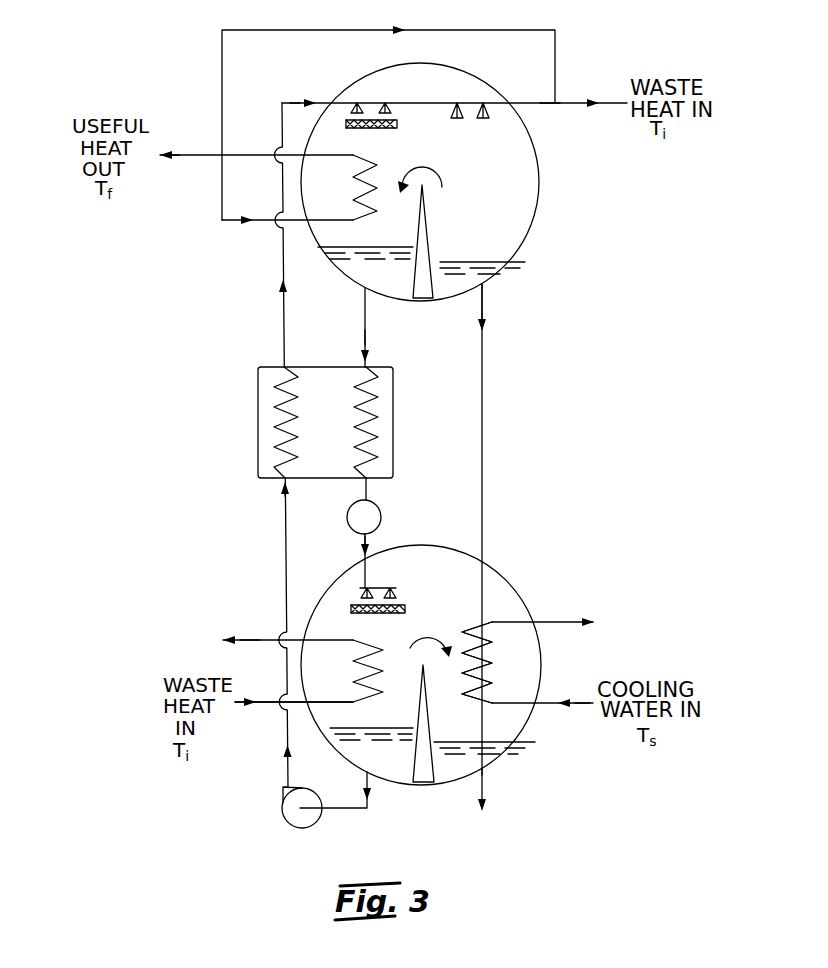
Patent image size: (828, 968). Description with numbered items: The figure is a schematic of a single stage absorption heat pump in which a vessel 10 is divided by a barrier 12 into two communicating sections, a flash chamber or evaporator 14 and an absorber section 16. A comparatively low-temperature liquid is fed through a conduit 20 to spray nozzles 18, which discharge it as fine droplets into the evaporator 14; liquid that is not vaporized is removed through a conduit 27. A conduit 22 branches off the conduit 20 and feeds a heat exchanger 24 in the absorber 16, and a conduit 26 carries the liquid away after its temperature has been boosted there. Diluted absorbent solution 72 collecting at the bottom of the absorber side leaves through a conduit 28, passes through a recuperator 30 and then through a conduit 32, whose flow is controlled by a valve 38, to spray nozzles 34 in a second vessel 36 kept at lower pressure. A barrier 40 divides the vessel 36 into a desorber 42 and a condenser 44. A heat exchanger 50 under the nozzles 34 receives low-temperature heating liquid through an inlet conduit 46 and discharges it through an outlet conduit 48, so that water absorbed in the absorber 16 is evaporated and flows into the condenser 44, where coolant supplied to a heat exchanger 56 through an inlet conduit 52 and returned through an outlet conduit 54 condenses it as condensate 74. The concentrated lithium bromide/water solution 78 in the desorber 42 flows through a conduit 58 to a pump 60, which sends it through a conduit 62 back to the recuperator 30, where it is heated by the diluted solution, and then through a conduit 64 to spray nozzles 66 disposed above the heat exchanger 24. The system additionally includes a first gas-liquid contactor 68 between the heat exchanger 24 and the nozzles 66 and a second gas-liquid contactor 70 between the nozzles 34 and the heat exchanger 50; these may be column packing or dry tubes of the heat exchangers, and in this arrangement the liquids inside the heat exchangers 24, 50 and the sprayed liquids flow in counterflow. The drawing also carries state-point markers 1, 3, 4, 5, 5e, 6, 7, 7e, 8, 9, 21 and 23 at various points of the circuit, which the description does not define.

The waste heat inlet state point 1 is at (540, 86).
The useful heat outlet return line 3 is at (287, 234).
The liquid outlet state point 4 is at (377, 346).
The valve outlet state point 5 is at (404, 522).
The spray state point lower vessel 5e is at (372, 628).
The pump outlet state point 6 is at (303, 664).
The recirculated liquid state point 7 is at (286, 216).
The spray state point upper vessel 7e is at (371, 146).
The rotation of upper vessel 8 is at (429, 166).
The useful heat output state point 9 is at (166, 141).
The vessel 10 is at (536, 254).
The barrier 12 is at (427, 218).
The flash chamber (evaporator) 14 is at (478, 196).
The absorber section 16 is at (315, 195).
The spray nozzles 18 is at (460, 118).
The conduit 20 is at (598, 106).
The waste heat outlet state point 21 is at (248, 623).
The conduit 22 is at (435, 30).
The cooling water inlet state point 23 is at (571, 719).
The heat exchanger 24 is at (374, 214).
The conduit 26 is at (186, 152).
The conduit 27 is at (484, 308).
The conduit 28 is at (368, 315).
The heat exchanger (recuperator) 30 is at (393, 425).
The conduit 32 is at (393, 533).
The spray nozzles 34 is at (397, 590).
The second vessel 36 is at (484, 542).
The valve 38 is at (347, 517).
The barrier 40 is at (420, 700).
The desorber 42 is at (315, 681).
The condenser 44 is at (500, 677).
The inlet conduit 46 is at (260, 700).
The outlet conduit 48 is at (255, 641).
The heat exchanger 50 is at (377, 690).
The inlet conduit 52 is at (575, 702).
The outlet conduit 54 is at (572, 625).
The heat exchanger 56 is at (487, 657).
The conduit 58 is at (370, 787).
The pump 60 is at (280, 806).
The conduit 62 is at (285, 565).
The conduit 64 is at (280, 305).
The spray nozzles 66 is at (365, 103).
The first gas-liquid contactor 68 is at (397, 124).
The second gas-liquid contactor 70 is at (440, 289).
The diluted absorbent solution 72 is at (368, 287).
The condensate 74 is at (440, 769).
The lithium bromide/water solution 78 is at (393, 767).